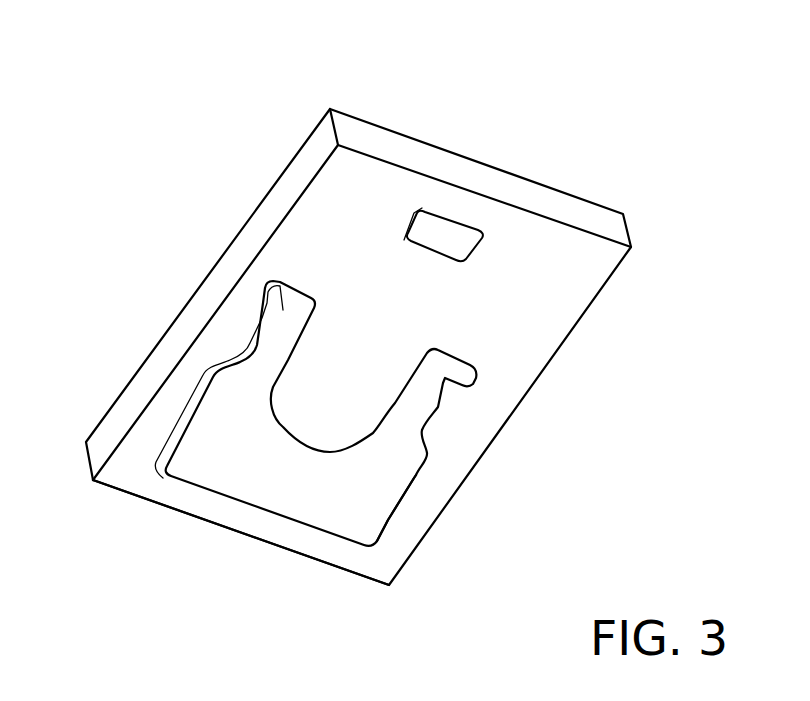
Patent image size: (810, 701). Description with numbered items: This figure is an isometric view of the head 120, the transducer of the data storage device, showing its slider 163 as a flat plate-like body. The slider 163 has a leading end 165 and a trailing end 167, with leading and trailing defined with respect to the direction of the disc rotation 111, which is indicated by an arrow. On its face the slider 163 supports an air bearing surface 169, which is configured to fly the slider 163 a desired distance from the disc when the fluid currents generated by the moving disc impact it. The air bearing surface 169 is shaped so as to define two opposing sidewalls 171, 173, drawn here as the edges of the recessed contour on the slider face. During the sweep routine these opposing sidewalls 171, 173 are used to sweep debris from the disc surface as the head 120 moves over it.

The head 120 is at (238, 57).
The direction of the disc rotation 111 is at (190, 572).
The slider 163 is at (240, 230).
The trailing end 167 is at (487, 175).
The leading end 165 is at (246, 535).
The sidewall 171 is at (192, 402).
The sidewall 173 is at (408, 490).
The air bearing surface 169 is at (313, 503).